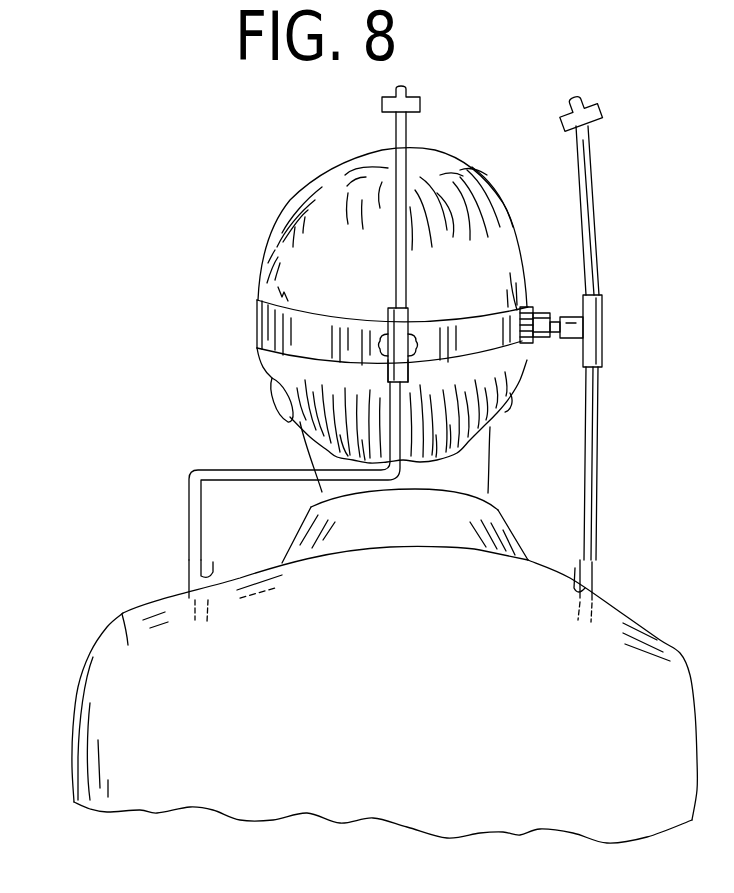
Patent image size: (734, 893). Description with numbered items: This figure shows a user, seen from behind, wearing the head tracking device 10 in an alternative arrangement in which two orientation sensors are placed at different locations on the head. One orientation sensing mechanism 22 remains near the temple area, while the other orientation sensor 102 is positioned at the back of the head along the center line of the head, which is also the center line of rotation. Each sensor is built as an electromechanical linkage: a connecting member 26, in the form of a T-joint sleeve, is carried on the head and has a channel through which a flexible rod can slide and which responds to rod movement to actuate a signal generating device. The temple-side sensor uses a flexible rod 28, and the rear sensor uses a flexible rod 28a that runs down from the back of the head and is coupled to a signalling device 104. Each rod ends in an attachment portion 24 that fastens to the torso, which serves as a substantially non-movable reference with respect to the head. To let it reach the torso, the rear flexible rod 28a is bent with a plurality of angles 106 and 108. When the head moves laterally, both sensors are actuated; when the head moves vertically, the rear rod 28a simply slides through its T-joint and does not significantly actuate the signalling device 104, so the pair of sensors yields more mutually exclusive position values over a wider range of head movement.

The head tracking device 10 is at (479, 120).
The orientation sensing mechanism 22 is at (643, 327).
The attachment portion 24 is at (168, 594).
The connecting member 26 is at (404, 370).
The flexible rod 28 is at (590, 145).
The flexible rod 28a is at (396, 123).
The orientation sensor 102 is at (380, 318).
The signalling device 104 is at (278, 340).
The angle 106 is at (395, 500).
The angle 108 is at (175, 470).